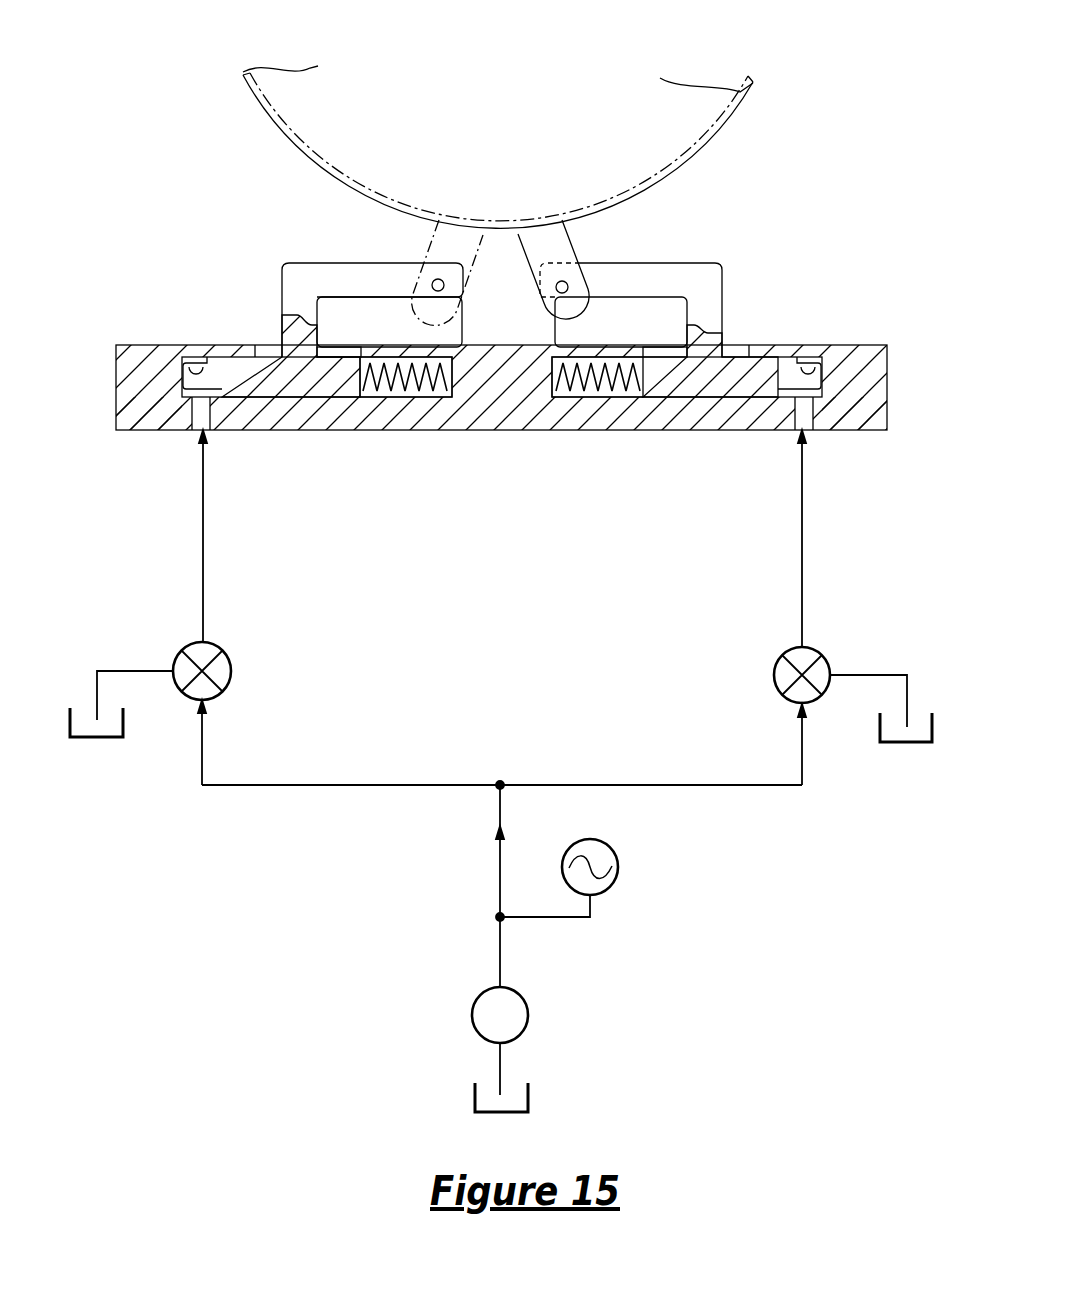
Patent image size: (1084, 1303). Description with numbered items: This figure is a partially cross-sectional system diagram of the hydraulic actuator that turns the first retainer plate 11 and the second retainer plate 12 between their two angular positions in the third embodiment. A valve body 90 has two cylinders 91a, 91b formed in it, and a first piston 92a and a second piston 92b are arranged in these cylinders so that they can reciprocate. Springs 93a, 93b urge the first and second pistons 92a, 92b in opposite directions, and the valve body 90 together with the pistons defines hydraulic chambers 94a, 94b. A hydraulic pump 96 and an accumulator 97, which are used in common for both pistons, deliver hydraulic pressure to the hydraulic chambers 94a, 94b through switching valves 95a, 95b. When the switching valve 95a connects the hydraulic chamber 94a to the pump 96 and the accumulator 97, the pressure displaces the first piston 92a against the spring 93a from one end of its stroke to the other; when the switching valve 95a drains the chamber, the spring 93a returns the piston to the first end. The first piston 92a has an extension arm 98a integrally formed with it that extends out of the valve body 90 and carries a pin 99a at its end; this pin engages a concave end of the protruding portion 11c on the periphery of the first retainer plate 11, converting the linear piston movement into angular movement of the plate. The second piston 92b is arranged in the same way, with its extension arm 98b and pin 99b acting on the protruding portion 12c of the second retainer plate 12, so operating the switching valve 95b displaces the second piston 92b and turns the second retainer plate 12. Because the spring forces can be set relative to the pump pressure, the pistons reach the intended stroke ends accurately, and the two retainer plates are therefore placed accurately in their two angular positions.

The first retainer plate 11 is at (366, 186).
The second retainer plate 12 is at (690, 178).
The protruding portion 11c is at (422, 232).
The protruding portion 12c is at (578, 240).
The valve body 90 is at (507, 410).
The cylinder 91a is at (403, 388).
The cylinder 91b is at (603, 388).
The first piston 92a is at (270, 390).
The second piston 92b is at (715, 388).
The spring 93a is at (448, 385).
The spring 93b is at (556, 385).
The hydraulic chamber 94a is at (198, 369).
The hydraulic chamber 94b is at (812, 368).
The switching valve 95a is at (232, 667).
The switching valve 95b is at (774, 672).
The hydraulic pump 96 is at (528, 1010).
The accumulator 97 is at (616, 878).
The extension arm 98a is at (288, 276).
The extension arm 98b is at (716, 283).
The pin 99a is at (437, 290).
The pin 99b is at (570, 290).